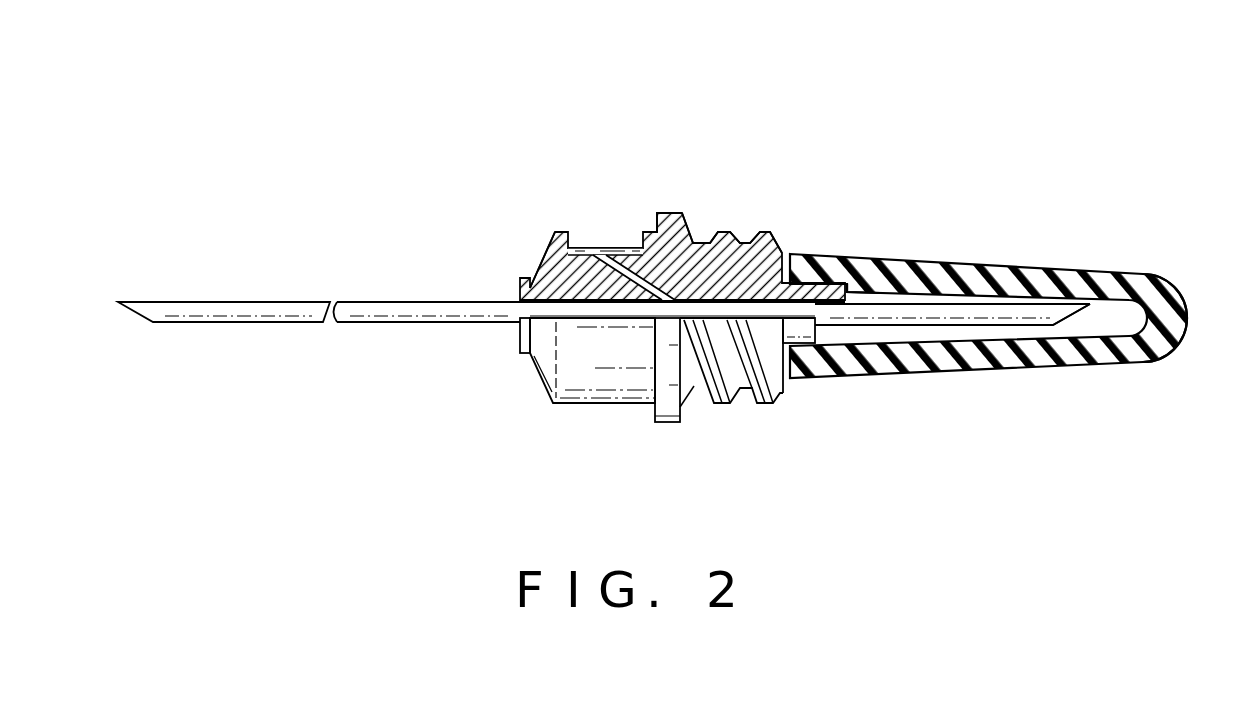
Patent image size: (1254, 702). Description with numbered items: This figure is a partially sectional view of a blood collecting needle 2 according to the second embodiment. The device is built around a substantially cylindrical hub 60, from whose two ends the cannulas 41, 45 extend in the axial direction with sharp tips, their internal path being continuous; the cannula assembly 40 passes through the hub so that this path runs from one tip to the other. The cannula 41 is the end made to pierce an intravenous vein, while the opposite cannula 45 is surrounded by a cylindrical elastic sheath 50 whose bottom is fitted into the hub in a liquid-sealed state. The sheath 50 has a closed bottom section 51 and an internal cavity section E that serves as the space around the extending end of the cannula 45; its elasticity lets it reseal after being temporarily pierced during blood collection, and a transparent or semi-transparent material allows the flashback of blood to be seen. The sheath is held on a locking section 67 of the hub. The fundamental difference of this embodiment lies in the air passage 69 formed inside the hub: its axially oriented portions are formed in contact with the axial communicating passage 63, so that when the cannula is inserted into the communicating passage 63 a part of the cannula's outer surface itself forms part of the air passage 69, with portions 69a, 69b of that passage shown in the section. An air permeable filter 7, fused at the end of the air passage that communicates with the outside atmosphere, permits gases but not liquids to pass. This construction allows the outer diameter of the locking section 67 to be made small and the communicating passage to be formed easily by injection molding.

The blood collecting needle 2 is at (829, 120).
The air permeable filter 7 is at (603, 246).
The needle 40 is at (398, 298).
The cannula 41 is at (200, 310).
The cannula 45 is at (1045, 312).
The elastic sheath 50 is at (1077, 268).
The bottom section 51 is at (1174, 292).
The hub 60 is at (611, 406).
The axial communicating passage 63 is at (545, 256).
The locking section 67 is at (836, 257).
The air passage 69 is at (740, 300).
The thread end 69a is at (878, 257).
The thread start 69b is at (613, 246).
The internal cavity section E is at (970, 300).